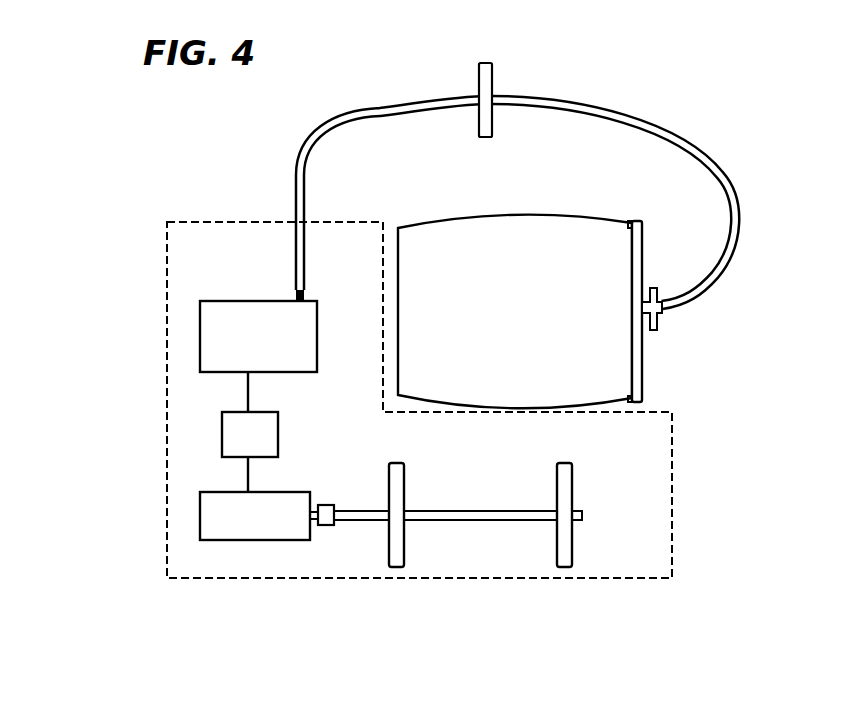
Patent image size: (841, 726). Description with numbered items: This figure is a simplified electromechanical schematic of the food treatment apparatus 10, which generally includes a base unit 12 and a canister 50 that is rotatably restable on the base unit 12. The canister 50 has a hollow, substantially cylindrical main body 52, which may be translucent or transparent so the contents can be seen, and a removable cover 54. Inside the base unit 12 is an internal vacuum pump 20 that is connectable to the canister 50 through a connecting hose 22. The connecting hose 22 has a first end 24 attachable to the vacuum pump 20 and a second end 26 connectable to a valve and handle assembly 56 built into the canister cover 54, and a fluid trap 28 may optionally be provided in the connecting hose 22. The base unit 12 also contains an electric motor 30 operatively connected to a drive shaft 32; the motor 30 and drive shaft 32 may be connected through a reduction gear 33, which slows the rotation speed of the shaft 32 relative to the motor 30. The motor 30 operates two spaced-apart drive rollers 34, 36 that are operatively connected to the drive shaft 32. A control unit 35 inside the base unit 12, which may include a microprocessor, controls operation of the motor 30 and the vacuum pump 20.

The food treatment apparatus 10 is at (117, 261).
The base unit 12 is at (161, 458).
The vacuum pump 20 is at (258, 336).
The connecting hose 22 is at (547, 112).
The first end 24 is at (306, 298).
The second end 26 is at (662, 297).
The fluid trap 28 is at (479, 88).
The electric motor 30 is at (255, 516).
The drive shaft 32 is at (360, 523).
The reduction gear 33 is at (330, 505).
The drive roller 34 is at (404, 491).
The control unit 35 is at (250, 434).
The drive roller 36 is at (572, 492).
The canister 50 is at (561, 275).
The main body 52 is at (515, 312).
The cover 54 is at (643, 352).
The valve and handle assembly 56 is at (664, 322).